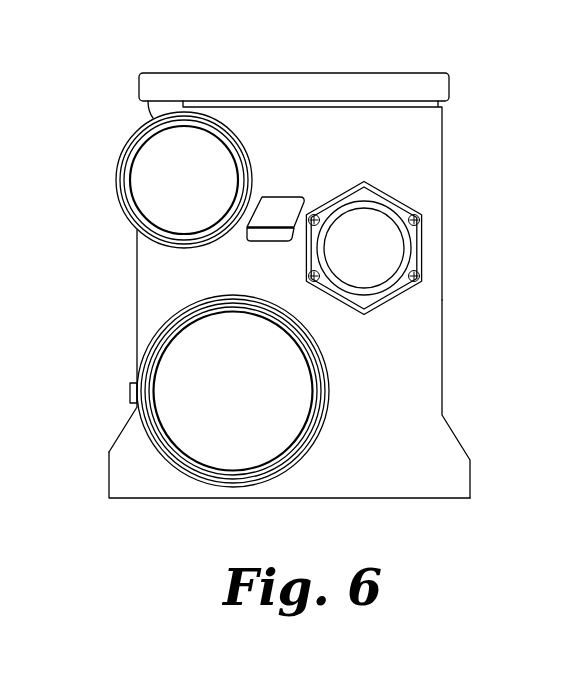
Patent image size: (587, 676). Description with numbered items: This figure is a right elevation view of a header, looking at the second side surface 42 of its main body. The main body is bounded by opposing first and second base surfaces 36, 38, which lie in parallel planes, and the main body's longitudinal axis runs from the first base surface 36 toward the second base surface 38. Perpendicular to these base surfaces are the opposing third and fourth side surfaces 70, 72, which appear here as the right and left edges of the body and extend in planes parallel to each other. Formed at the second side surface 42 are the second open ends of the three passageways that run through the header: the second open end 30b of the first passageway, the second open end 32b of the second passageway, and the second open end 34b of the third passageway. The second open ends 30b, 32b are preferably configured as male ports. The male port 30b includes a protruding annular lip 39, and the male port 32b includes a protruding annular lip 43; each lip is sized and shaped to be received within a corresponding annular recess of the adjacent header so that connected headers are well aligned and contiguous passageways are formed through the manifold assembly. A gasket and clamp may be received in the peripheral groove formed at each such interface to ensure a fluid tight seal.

The first base surface 36 is at (388, 80).
The second side surface 42 is at (422, 159).
The third side surface 70 is at (435, 313).
The second base surface 38 is at (403, 498).
The fourth side surface 72 is at (135, 293).
The annular lip 39 is at (145, 407).
The second open end 32b is at (130, 158).
The annular lip 43 is at (122, 193).
The second open end 30b is at (150, 378).
The second open end 34b is at (385, 252).